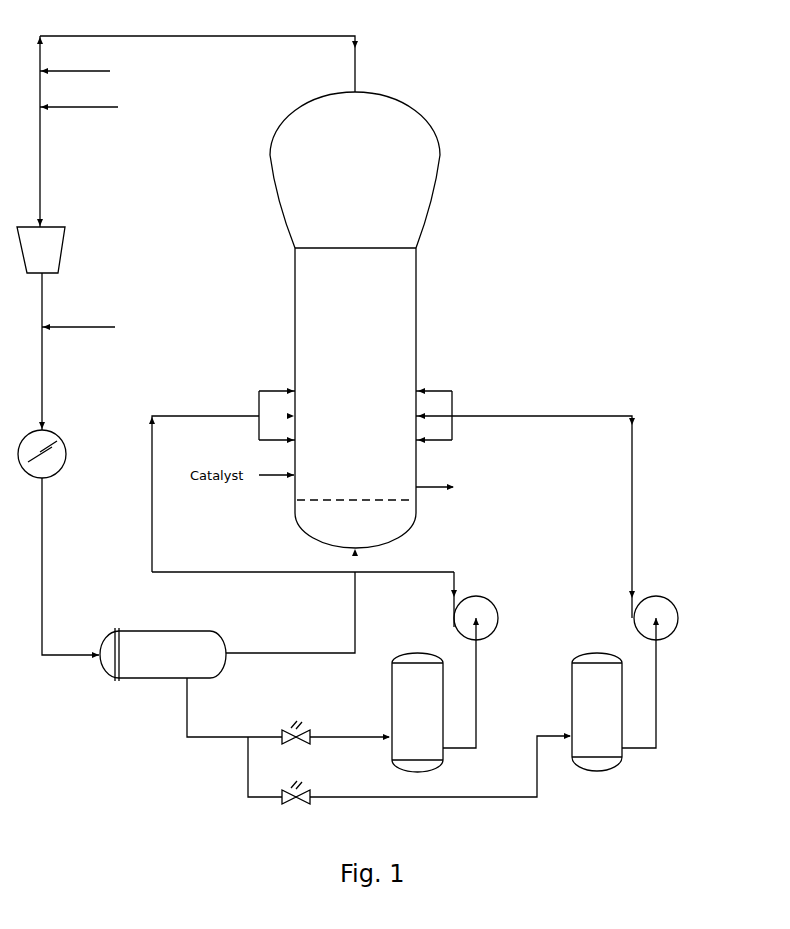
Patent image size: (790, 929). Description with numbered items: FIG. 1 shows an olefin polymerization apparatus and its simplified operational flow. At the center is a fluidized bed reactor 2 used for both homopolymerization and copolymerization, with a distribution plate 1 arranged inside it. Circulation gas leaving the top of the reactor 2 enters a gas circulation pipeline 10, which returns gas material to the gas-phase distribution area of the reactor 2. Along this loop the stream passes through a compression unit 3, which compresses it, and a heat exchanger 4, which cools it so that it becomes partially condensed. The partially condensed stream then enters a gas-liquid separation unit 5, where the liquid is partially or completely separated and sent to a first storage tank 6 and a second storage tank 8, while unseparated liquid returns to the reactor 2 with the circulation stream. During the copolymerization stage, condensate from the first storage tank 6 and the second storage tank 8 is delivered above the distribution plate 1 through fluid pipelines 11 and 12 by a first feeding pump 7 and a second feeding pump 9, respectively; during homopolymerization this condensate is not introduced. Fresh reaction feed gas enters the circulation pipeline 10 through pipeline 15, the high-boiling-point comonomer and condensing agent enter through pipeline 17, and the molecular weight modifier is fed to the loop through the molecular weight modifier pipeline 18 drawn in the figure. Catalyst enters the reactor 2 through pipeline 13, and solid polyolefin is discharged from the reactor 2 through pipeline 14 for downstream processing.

The distribution plate 1 is at (355, 500).
The fluidized bed reactor 2 is at (355, 320).
The compression unit 3 is at (65, 248).
The heat exchanger 4 is at (66, 450).
The gas-liquid separation unit 5 is at (163, 654).
The first storage tank 6 is at (417, 712).
The first feeding pump 7 is at (498, 613).
The second storage tank 8 is at (597, 712).
The second feeding pump 9 is at (680, 615).
The gas circulation pipeline 10 is at (203, 33).
The fluid pipeline 11 is at (433, 569).
The fluid pipeline 12 is at (633, 572).
The pipeline for introducing polymerization catalyst 13 is at (276, 467).
The pipeline for taking out solid polyolefin 14 is at (438, 476).
The fluid pipeline for introducing gas material 15 is at (78, 71).
The pipeline for high-boiling-point comonomer and condensing agent 17 is at (78, 325).
The molecular weight modifier feed line 18 is at (65, 107).